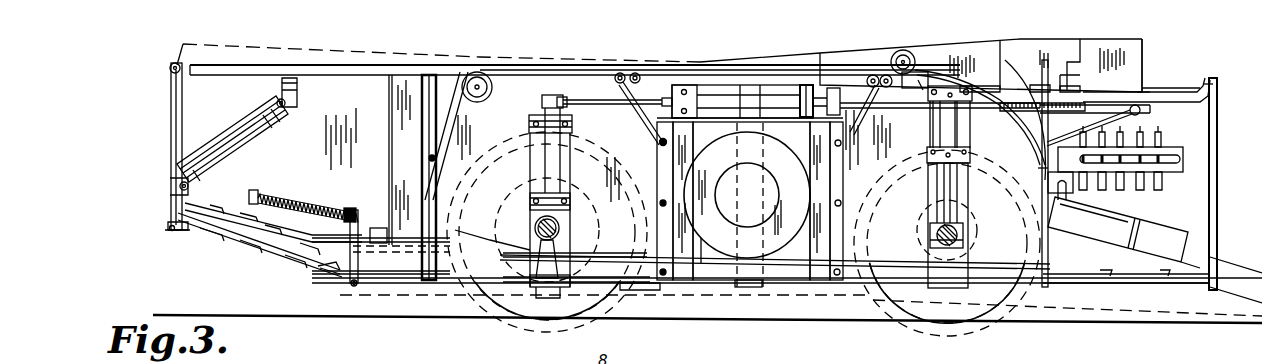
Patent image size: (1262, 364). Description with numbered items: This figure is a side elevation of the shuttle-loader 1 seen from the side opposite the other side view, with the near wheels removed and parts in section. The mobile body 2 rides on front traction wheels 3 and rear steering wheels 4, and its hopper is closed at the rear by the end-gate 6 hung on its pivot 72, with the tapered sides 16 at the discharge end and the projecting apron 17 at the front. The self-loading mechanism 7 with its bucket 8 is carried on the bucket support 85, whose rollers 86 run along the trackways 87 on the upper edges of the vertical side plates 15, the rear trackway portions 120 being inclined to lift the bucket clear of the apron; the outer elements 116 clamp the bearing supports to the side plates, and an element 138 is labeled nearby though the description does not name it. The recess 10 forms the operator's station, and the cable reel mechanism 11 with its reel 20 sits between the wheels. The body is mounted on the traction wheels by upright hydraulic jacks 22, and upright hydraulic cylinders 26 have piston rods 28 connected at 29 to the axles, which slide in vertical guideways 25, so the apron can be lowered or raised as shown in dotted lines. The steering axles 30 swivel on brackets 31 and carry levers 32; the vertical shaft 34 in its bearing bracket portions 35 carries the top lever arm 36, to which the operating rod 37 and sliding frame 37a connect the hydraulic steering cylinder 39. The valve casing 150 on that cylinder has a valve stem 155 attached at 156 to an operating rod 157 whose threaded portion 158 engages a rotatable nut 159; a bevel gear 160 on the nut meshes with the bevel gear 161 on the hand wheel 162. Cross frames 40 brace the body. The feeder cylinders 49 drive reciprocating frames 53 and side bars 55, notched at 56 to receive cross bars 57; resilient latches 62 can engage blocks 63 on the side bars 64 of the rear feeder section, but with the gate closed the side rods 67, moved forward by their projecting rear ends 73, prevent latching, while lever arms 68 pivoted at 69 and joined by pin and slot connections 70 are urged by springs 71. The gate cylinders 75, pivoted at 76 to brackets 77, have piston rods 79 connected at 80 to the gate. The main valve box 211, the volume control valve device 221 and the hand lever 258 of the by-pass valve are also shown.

The shuttle-loader 1 is at (378, 57).
The mobile body 2 is at (558, 83).
The front traction wheels 3 is at (993, 307).
The rear steering wheels 4 is at (515, 298).
The rear end-gate 6 is at (172, 133).
The self-loading mechanism 7 is at (1151, 43).
The bucket 8 is at (1160, 72).
The recess 10 is at (1197, 190).
The cable reel mechanism 11 is at (783, 252).
The vertical side plates 15 is at (915, 92).
The tapered outer sides 16 is at (245, 247).
The projecting apron 17 is at (1250, 250).
The reel 20 is at (782, 156).
The upright hydraulic jacks 22 is at (957, 125).
The vertical guideways 25 is at (968, 190).
The upright hydraulic cylinders 26 is at (930, 130).
The piston rods 28 is at (947, 225).
The connection 29 is at (928, 241).
The axles 30 is at (560, 237).
The brackets 31 is at (564, 201).
The levers 32 is at (567, 281).
The vertical shaft 34 is at (556, 162).
The bearing bracket portions 35 is at (572, 124).
The top lever arm 36 is at (546, 100).
The operating rod 37 is at (592, 103).
The sliding frame 37a is at (713, 87).
The hydraulic steering cylinder 39 is at (758, 103).
The cross frames 40 is at (663, 284).
The hydraulic cylinders 49 is at (1128, 233).
The reciprocating frames 53 is at (1188, 234).
The side bars 55 is at (727, 266).
The notches 56 is at (1110, 268).
The cross bars 57 is at (1165, 273).
The resilient latches 62 is at (480, 230).
The blocks 63 is at (454, 272).
The side bars of rearward feeder section 64 is at (380, 251).
The side rods 67 is at (297, 236).
The lever arms 68 is at (345, 266).
The pivot 69 is at (352, 284).
The pin and slot connections 70 is at (357, 230).
The springs 71 is at (300, 205).
The gate pivot 72 is at (170, 70).
The projecting rear ends 73 is at (167, 224).
The hydraulic cylinders 75 is at (250, 134).
The upper pivot 76 is at (284, 109).
The bracket 77 is at (294, 92).
The piston rods 79 is at (190, 188).
The pivotal connection 80 is at (177, 187).
The bucket support 85 is at (1005, 60).
The rollers 86 is at (900, 52).
The trackways 87 is at (1178, 93).
The outer elements 116 is at (482, 72).
The inclined trackway portions 120 is at (977, 80).
The top cover 138 is at (807, 63).
The valve casing 150 is at (745, 105).
The valve stem 155 is at (897, 102).
The stem attachment 156 is at (981, 65).
The operating rod 157 is at (878, 108).
The threaded portion 158 is at (1143, 63).
The rotatable nut 159 is at (1023, 112).
The bevel gear 160 is at (1042, 131).
The bevel gear 161 is at (1040, 80).
The hand wheel 162 is at (1061, 80).
The main valve box 211 is at (1190, 146).
The volume control valve device 221 is at (1043, 198).
The hand lever 258 is at (1151, 115).